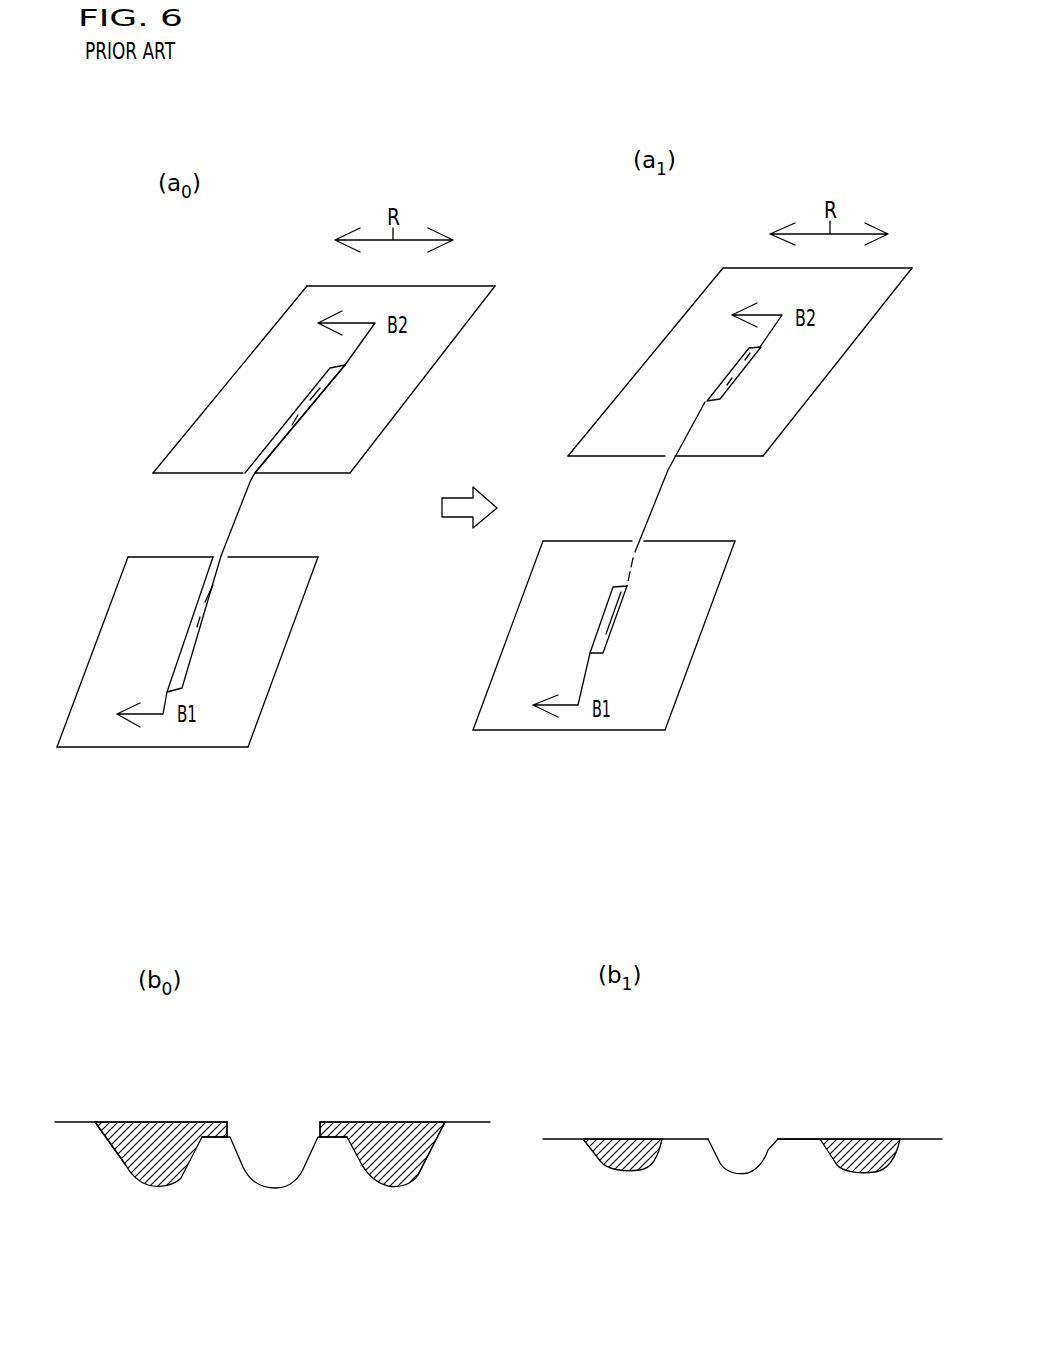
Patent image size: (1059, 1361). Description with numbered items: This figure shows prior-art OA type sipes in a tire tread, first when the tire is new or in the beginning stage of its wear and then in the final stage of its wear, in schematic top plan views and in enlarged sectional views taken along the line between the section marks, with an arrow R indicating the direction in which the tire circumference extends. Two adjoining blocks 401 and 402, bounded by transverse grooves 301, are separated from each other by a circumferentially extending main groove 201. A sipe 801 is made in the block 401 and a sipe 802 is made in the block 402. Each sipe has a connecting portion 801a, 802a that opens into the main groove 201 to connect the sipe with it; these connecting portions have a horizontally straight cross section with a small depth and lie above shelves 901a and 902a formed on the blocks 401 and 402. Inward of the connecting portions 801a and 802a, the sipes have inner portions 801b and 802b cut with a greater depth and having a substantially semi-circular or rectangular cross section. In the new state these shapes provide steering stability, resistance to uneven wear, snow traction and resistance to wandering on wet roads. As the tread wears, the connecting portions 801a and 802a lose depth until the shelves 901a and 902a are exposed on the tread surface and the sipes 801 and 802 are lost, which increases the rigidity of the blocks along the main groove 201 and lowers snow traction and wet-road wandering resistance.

The main groove 201 is at (247, 516).
The transverse groove 301 is at (165, 422).
The block 401 is at (237, 723).
The block 402 is at (400, 353).
The sipe 801 is at (195, 643).
The connecting portion 801a is at (202, 1122).
The inner portion 801b is at (118, 1132).
The sipe 802 is at (312, 390).
The connecting portion 802a is at (333, 1127).
The inner portion 802b is at (418, 1143).
The shelf 901a is at (212, 1147).
The shelf 902a is at (330, 1150).